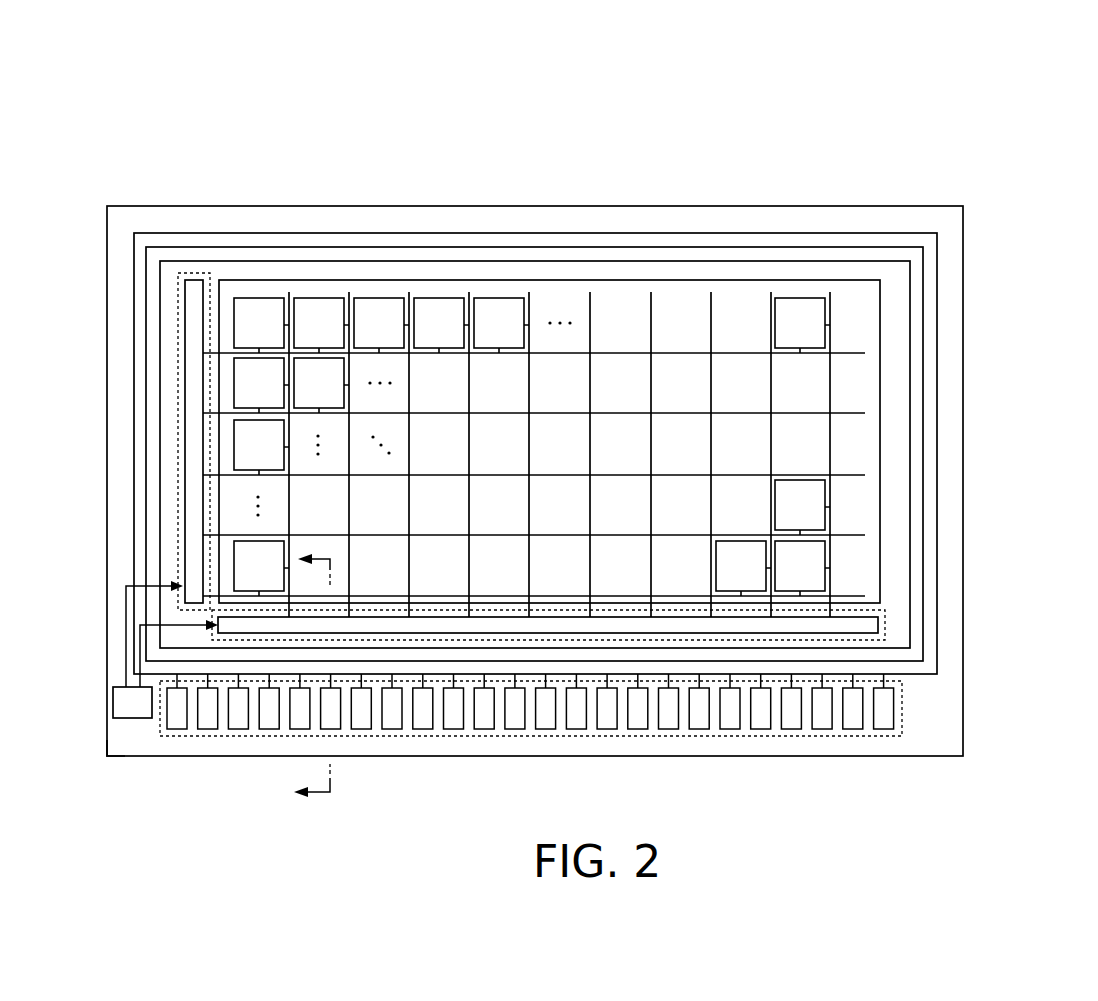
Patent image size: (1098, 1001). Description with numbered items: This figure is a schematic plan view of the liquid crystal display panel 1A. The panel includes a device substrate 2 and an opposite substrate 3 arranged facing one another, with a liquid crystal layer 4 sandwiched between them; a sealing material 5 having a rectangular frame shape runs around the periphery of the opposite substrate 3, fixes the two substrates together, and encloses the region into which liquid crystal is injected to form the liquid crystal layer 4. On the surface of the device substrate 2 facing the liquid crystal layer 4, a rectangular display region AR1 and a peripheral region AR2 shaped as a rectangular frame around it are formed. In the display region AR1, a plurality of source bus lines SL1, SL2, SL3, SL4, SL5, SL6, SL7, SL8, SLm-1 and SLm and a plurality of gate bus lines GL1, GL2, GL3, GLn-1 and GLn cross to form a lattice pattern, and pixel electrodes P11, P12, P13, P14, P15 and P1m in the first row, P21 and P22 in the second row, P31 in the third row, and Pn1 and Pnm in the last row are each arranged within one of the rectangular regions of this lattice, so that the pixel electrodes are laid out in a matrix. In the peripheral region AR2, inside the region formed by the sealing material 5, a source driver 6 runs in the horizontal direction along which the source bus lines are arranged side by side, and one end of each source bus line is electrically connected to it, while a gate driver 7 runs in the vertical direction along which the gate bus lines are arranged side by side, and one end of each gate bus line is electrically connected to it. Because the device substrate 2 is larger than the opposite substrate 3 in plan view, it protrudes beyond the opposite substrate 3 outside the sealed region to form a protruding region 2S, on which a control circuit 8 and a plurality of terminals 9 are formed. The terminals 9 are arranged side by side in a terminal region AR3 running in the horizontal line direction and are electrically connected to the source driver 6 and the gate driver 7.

The liquid crystal display panel 1A is at (939, 108).
The device substrate 2 is at (955, 692).
The protruding region 2S is at (128, 735).
The opposite substrate 3 is at (937, 243).
The liquid crystal layer 4 is at (904, 309).
The sealing material 5 is at (918, 293).
The source driver 6 is at (872, 627).
The gate driver 7 is at (183, 491).
The control circuit 8 is at (112, 700).
The terminals 9 is at (853, 730).
The display region AR1 is at (227, 298).
The peripheral region AR2 is at (896, 276).
The terminal region AR3 is at (902, 697).
The source bus line SL1 is at (289, 292).
The source bus line SL2 is at (349, 292).
The source bus line SL3 is at (409, 292).
The source bus line SL4 is at (469, 292).
The source bus line SL5 is at (529, 292).
The source bus line SL6 is at (590, 292).
The source bus line SL7 is at (651, 292).
The source bus line SL8 is at (711, 292).
The source bus line SLm-1 is at (771, 292).
The source bus line SLm is at (830, 292).
The gate bus line GL1 is at (853, 353).
The gate bus line GL2 is at (853, 413).
The gate bus line GL3 is at (853, 475).
The gate bus line GLn-1 is at (853, 535).
The gate bus line GLn is at (853, 596).
The pixel electrode P11 is at (261, 325).
The pixel electrode P12 is at (321, 325).
The pixel electrode P13 is at (381, 325).
The pixel electrode P14 is at (441, 325).
The pixel electrode P15 is at (501, 325).
The pixel electrode P1m is at (802, 325).
The pixel electrode P21 is at (261, 385).
The pixel electrode P22 is at (321, 385).
The pixel electrode P31 is at (261, 447).
The pixel electrode Pn1 is at (261, 568).
The pixel electrode Pnm is at (802, 568).